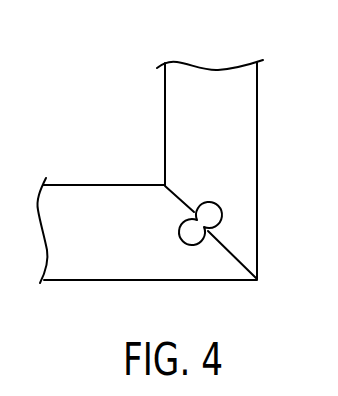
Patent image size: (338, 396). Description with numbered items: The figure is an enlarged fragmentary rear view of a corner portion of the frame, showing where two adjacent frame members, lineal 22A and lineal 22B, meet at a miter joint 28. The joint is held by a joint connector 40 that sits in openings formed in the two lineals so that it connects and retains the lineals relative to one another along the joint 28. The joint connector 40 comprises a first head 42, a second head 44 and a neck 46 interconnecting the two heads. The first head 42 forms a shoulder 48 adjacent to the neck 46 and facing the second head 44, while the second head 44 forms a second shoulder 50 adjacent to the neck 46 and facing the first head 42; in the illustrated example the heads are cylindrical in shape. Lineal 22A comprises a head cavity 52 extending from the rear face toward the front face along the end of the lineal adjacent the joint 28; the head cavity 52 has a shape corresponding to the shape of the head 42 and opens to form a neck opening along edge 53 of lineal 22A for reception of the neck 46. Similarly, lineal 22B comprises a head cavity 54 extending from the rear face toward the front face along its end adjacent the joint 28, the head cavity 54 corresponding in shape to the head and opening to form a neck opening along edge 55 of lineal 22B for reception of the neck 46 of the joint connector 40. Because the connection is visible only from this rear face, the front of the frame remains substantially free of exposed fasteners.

The lineal 22A is at (60, 283).
The lineal 22B is at (257, 78).
The miter joint 28 is at (258, 272).
The joint connector 40 is at (226, 209).
The first head 42 is at (195, 245).
The second head 44 is at (210, 201).
The neck 46 is at (210, 231).
The shoulder 48 is at (193, 208).
The second shoulder 50 is at (223, 222).
The head cavity 52 is at (182, 241).
The edge 53 is at (193, 213).
The head cavity 54 is at (222, 204).
The edge 55 is at (233, 256).